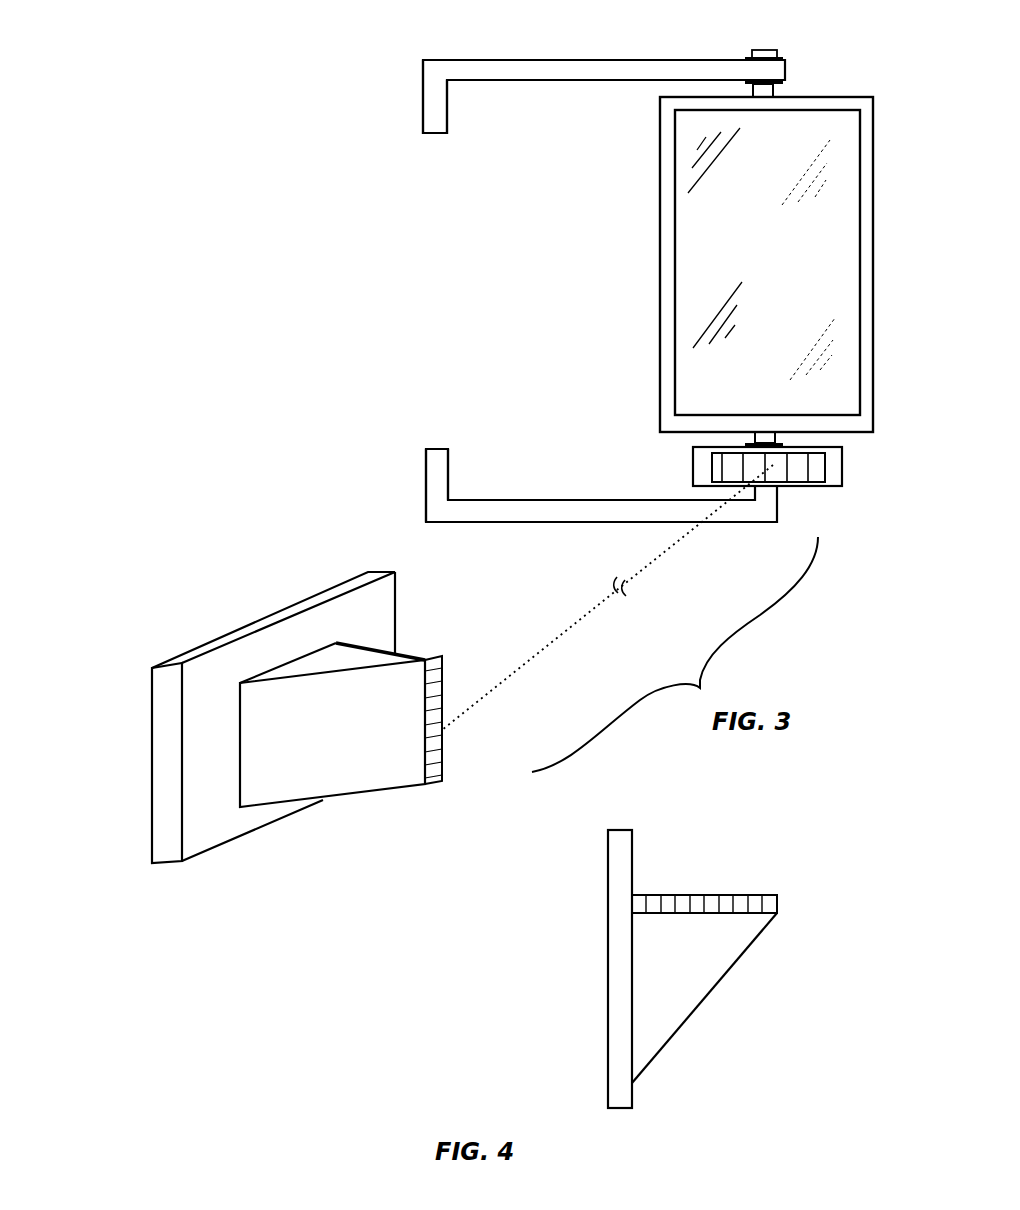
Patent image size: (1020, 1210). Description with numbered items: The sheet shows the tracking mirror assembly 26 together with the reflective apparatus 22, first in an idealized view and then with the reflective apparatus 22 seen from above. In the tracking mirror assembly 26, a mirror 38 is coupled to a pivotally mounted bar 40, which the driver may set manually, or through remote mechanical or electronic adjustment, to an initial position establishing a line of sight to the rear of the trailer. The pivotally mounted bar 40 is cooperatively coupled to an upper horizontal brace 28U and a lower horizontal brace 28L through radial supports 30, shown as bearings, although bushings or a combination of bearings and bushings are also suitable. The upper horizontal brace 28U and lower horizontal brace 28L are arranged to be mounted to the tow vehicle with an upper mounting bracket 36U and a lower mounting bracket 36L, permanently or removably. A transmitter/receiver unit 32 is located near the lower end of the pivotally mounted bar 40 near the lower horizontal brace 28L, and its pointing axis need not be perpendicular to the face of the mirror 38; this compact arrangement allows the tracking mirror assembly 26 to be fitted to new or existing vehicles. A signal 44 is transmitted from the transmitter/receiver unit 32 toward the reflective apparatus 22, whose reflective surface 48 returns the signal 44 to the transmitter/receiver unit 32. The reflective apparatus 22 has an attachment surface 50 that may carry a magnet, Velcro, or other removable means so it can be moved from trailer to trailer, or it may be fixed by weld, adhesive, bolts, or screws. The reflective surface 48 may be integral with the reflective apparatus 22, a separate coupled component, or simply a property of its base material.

In FIG. 3, the reflective apparatus 22 is at (249, 711).
In FIG. 4, the reflective apparatus 22 is at (688, 969).
In FIG. 3, the tracking mirror assembly 26 is at (618, 249).
In FIG. 3, the upper horizontal brace 28U is at (612, 58).
In FIG. 3, the lower horizontal brace 28L is at (561, 500).
In FIG. 3, the radial supports 30 is at (777, 52).
In FIG. 3, the transmitter/receiver unit 32 is at (844, 470).
In FIG. 3, the upper mounting bracket 36U is at (422, 88).
In FIG. 3, the lower mounting bracket 36L is at (425, 482).
In FIG. 3, the mirror 38 is at (786, 260).
In FIG. 3, the pivotally mounted bar 40 is at (776, 89).
In FIG. 3, the signal 44 is at (588, 612).
In FIG. 3, the reflective surface 48 is at (412, 655).
In FIG. 4, the reflective surface 48 is at (697, 893).
In FIG. 3, the attachment surface 50 is at (245, 625).
In FIG. 4, the attachment surface 50 is at (608, 955).